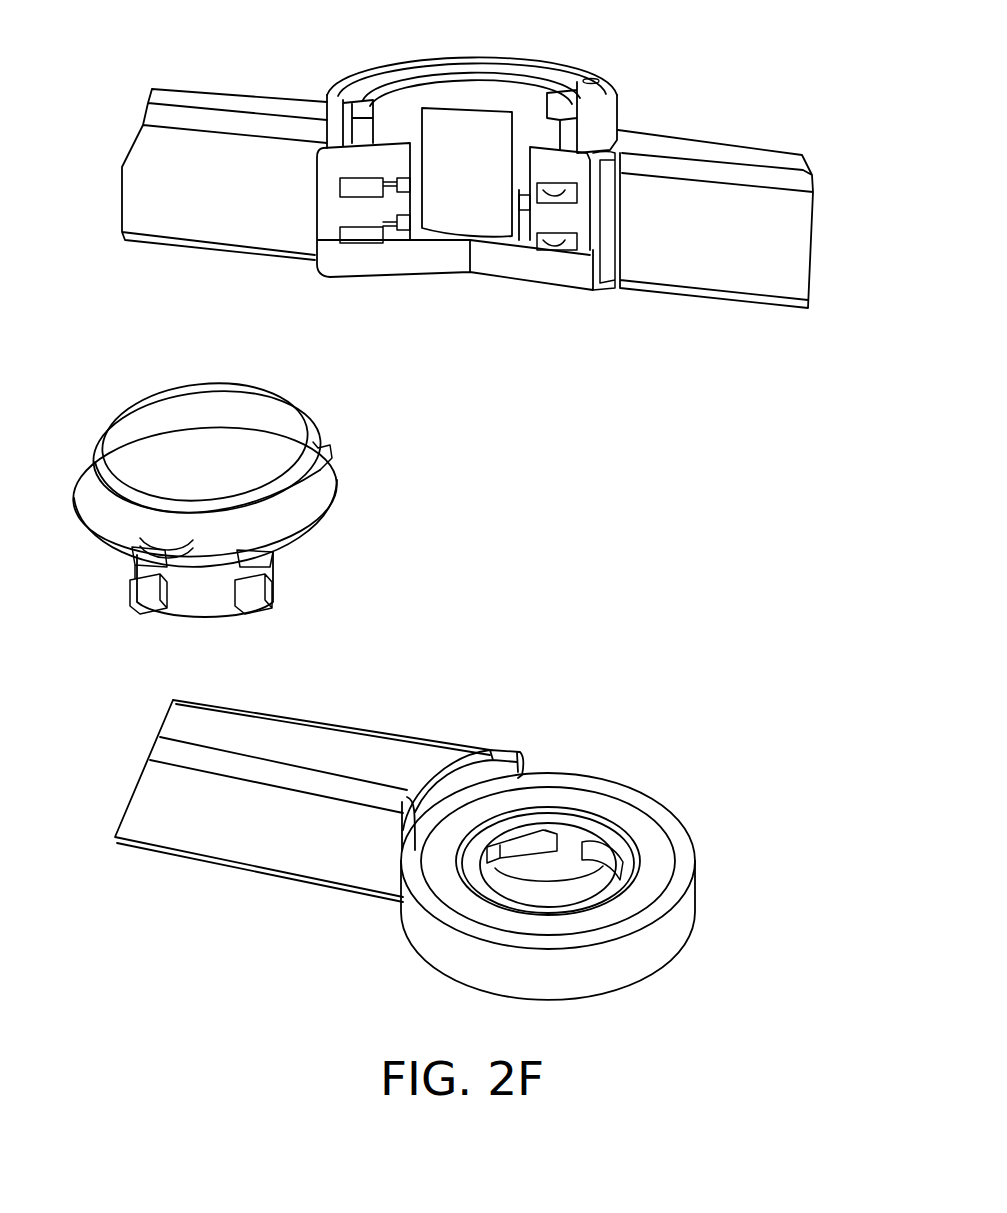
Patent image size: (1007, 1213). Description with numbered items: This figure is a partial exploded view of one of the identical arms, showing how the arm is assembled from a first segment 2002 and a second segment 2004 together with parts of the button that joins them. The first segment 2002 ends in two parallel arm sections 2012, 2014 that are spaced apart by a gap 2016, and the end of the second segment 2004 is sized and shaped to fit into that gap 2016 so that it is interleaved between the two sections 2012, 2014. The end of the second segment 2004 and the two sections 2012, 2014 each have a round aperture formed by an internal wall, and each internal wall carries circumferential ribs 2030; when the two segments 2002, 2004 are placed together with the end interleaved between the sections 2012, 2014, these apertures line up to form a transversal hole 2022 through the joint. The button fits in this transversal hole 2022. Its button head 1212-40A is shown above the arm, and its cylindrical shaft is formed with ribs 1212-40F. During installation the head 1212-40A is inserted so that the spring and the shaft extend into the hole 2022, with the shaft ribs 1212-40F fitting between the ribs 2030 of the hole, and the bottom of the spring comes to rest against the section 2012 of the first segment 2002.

The first segment 2002 is at (207, 225).
The second segment 2004 is at (707, 267).
The arm section 2012 is at (570, 275).
The arm section 2014 is at (600, 128).
The gap 2016 is at (585, 230).
The transversal hole 2022 is at (486, 128).
The circumferential ribs 2030 is at (520, 220).
The button head 1212-40A is at (155, 425).
The ribs 1212-40F is at (137, 562).